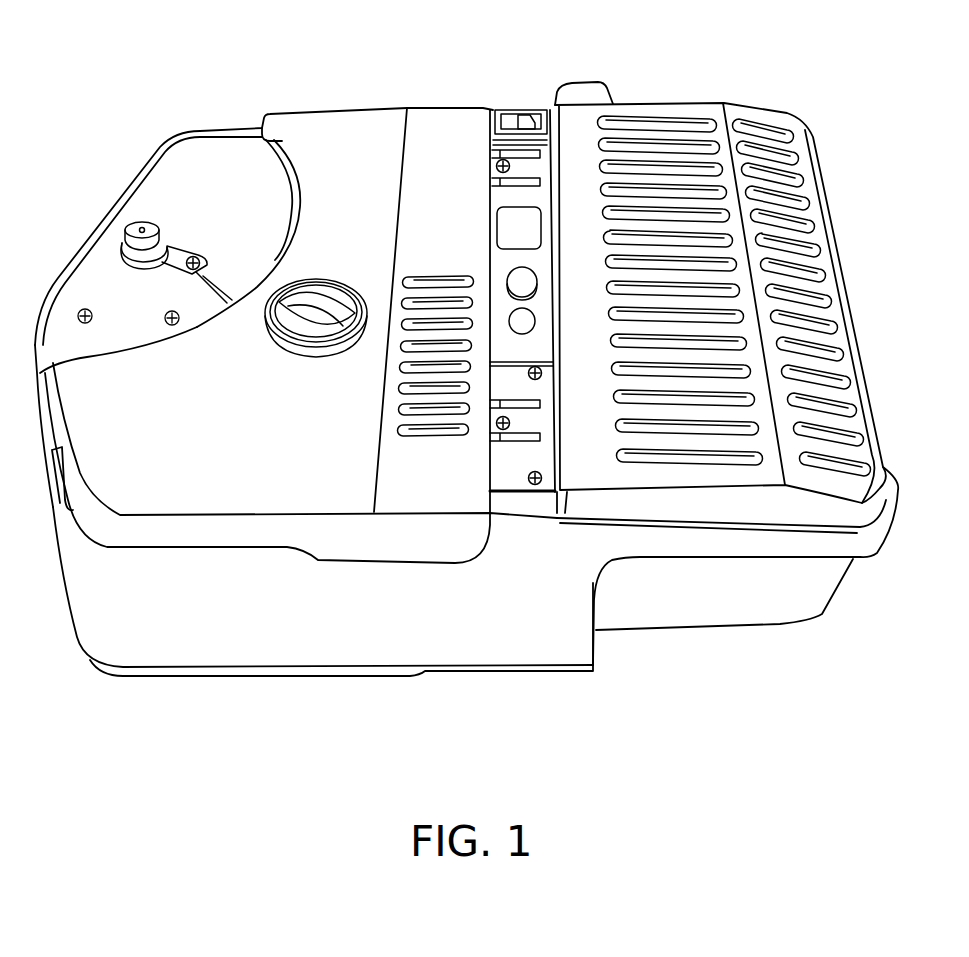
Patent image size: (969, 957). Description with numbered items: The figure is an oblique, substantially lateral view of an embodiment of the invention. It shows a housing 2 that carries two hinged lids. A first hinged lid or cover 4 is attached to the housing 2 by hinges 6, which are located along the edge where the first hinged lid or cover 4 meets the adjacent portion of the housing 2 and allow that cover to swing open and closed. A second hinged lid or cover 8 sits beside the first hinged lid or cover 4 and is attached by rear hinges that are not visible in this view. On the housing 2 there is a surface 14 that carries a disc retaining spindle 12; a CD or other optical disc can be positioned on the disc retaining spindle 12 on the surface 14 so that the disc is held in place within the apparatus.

The housing 2 is at (823, 617).
The first hinged lid or cover 4 is at (355, 115).
The hinges 6 is at (508, 150).
The second hinged lid or cover 8 is at (733, 106).
The disc retaining spindle 12 is at (137, 222).
The surface 14 is at (218, 160).